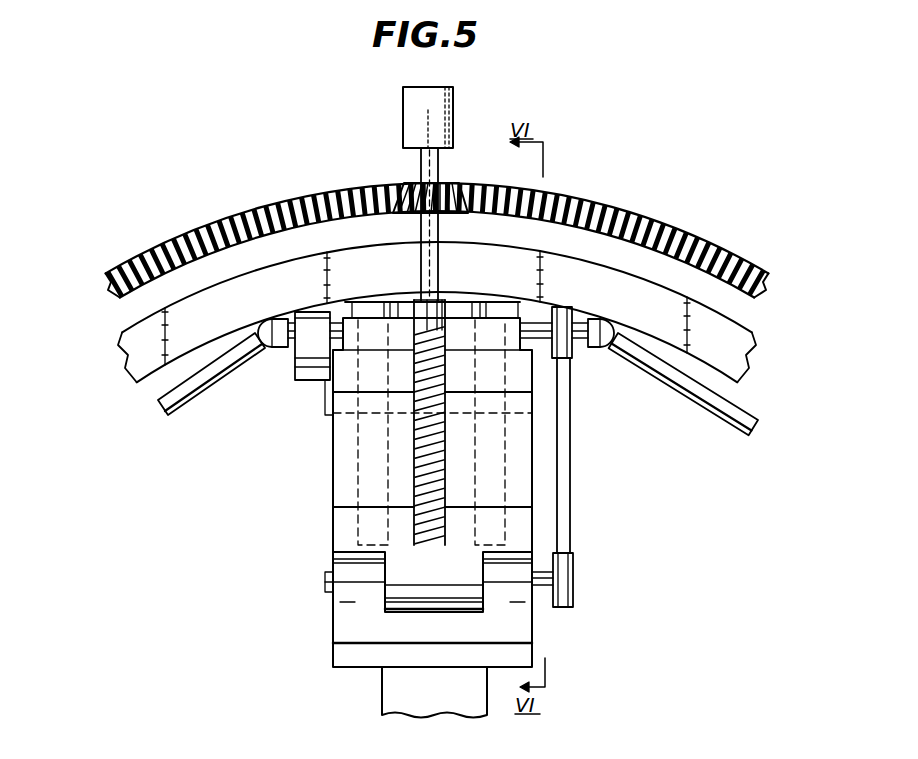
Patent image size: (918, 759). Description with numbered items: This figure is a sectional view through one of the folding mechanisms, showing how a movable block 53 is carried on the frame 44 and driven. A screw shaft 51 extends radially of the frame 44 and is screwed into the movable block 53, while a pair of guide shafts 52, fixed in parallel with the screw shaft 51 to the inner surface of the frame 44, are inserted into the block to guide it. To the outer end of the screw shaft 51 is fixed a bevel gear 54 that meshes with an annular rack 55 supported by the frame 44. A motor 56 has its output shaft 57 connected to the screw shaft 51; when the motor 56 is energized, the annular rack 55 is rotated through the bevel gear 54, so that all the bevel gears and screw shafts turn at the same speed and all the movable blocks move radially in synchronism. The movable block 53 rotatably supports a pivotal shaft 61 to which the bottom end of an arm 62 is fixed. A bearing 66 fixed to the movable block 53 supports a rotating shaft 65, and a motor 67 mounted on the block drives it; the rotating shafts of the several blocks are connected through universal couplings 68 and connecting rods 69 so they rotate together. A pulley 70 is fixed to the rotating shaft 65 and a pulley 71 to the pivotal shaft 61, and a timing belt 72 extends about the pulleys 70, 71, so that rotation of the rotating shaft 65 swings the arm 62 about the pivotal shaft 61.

The frame 44 is at (672, 305).
The screw shaft 51 is at (422, 300).
The guide shaft 52 is at (380, 300).
The movable block 53 is at (333, 490).
The bevel gear 54 is at (460, 190).
The annular rack 55 is at (637, 215).
The motor 56 is at (403, 101).
The output shaft 57 is at (421, 165).
The pivotal shaft 61 is at (541, 594).
The arm 62 is at (388, 696).
The rotating shaft 65 is at (540, 320).
The bearing 66 is at (458, 340).
The motor 67 is at (310, 311).
The universal coupling 68 is at (610, 348).
The connecting rod 69 is at (672, 385).
The pulley 70 is at (575, 308).
The pulley 71 is at (575, 572).
The timing belt 72 is at (570, 464).